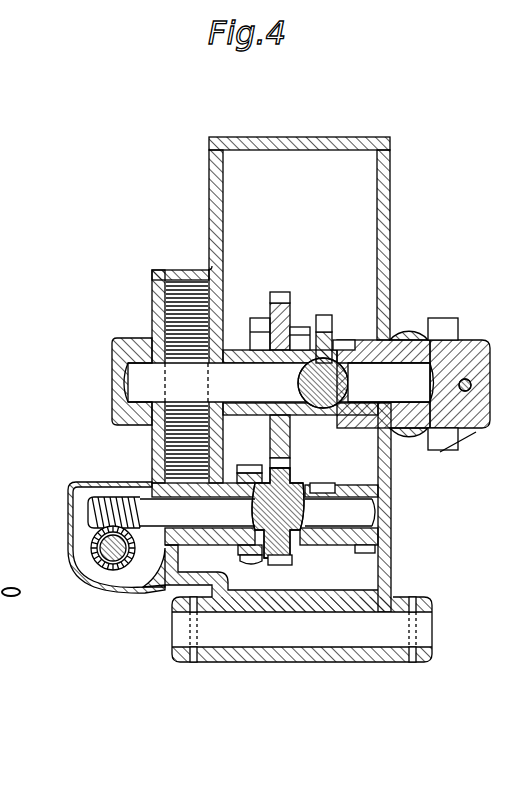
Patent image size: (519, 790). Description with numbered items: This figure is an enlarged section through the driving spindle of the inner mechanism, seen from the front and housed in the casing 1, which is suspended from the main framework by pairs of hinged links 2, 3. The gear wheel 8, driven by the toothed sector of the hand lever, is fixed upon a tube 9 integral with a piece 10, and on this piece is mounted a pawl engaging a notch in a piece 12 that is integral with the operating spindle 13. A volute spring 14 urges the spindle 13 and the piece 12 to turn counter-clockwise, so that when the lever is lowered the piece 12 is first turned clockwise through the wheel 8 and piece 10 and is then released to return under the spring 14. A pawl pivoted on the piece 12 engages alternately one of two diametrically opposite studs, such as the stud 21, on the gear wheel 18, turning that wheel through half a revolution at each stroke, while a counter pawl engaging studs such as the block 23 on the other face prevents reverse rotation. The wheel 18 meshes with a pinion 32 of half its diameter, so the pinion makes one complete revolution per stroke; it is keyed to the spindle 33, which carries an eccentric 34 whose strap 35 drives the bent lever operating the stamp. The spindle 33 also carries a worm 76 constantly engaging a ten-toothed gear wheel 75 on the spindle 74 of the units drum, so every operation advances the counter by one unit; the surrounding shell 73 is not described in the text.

The casing 1 is at (388, 229).
The hinged links 2 is at (129, 339).
The hinged links 3 is at (417, 607).
The gear wheel 8 is at (458, 343).
The tube 9 is at (416, 363).
The piece 10 is at (344, 348).
The piece 12 is at (323, 328).
The operating spindle 13 is at (279, 383).
The volute spring 14 is at (183, 292).
The gear wheel 18 is at (277, 306).
The stud or block 21 is at (300, 331).
The stud or block 23 is at (260, 334).
The pinion 32 is at (286, 483).
The spindle 33 is at (257, 518).
The eccentric 34 is at (245, 547).
The strap 35 is at (261, 478).
The gear casing 73 is at (68, 538).
The spindle 74 is at (102, 553).
The gear wheel 75 is at (110, 568).
The worm 76 is at (90, 505).